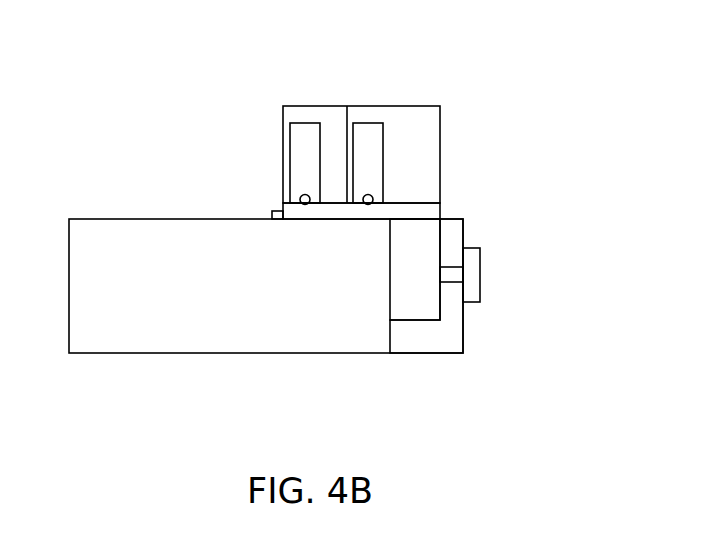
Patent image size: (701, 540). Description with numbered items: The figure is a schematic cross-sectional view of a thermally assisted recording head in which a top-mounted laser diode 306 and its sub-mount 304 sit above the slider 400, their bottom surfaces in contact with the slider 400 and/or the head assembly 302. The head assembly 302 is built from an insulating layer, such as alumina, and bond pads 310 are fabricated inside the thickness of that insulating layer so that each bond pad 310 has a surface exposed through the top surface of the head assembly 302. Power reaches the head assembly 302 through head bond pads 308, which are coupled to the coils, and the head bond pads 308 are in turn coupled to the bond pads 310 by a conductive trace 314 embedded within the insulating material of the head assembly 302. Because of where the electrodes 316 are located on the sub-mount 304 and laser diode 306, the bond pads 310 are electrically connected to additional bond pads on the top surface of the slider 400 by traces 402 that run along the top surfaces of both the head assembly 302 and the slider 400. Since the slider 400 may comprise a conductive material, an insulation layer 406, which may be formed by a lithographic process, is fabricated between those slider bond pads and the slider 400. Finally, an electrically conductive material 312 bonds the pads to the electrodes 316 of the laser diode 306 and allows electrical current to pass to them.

The head assembly 302 is at (443, 342).
The sub-mount 304 is at (340, 118).
The laser diode 306 is at (437, 123).
The head bond pads 308 is at (477, 273).
The bond pads 310 is at (420, 238).
The electrically conductive material 312 is at (303, 195).
The conductive trace 314 is at (453, 273).
The electrodes 316 is at (303, 137).
The slider 400 is at (112, 242).
The traces 402 is at (428, 212).
The insulation layer 406 is at (278, 208).